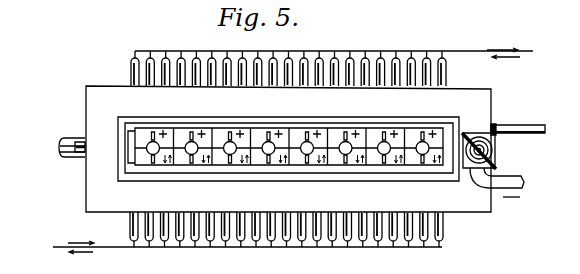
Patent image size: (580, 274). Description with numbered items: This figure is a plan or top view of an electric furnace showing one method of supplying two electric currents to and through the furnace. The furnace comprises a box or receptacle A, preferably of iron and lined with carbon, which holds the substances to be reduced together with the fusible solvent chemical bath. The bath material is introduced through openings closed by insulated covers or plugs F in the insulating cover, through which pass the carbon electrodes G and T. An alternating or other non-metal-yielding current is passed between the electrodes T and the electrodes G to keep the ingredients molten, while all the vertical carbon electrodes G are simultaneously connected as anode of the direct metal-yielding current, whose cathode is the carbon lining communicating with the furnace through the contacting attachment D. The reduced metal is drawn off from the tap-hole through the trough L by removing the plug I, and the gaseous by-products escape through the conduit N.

The electrodes T is at (130, 64).
The box or receptacle A is at (92, 196).
The insulated covers or plugs F is at (157, 130).
The vertical carbon electrodes G is at (229, 153).
The trough L is at (59, 147).
The plug I is at (80, 140).
The conduit N is at (523, 127).
The contacting attachment D is at (493, 145).